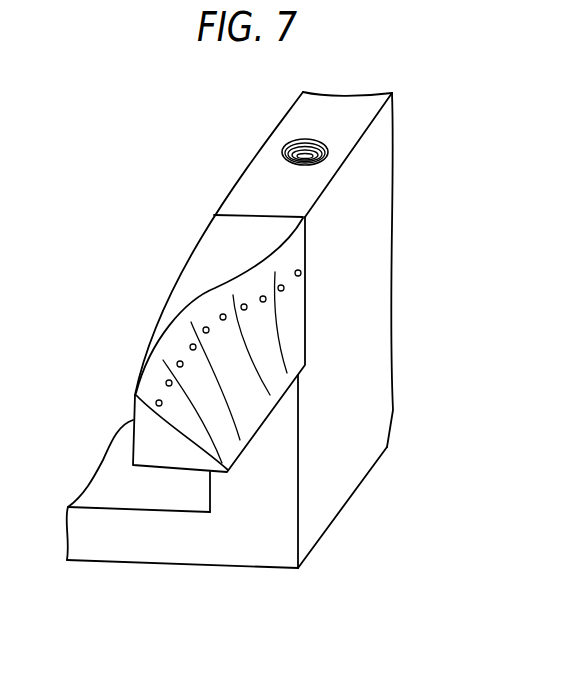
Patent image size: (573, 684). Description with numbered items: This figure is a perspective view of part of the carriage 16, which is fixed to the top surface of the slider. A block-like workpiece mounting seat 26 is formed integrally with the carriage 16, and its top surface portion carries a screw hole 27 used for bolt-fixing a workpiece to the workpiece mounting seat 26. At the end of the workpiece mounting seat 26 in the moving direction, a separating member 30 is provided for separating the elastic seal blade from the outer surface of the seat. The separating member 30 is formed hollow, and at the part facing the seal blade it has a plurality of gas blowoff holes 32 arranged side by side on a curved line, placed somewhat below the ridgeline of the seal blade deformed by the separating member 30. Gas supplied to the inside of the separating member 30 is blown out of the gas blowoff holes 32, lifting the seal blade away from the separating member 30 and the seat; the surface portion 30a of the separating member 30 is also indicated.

The carriage 16 is at (140, 542).
The workpiece mounting seat 26 is at (367, 245).
The screw hole 27 is at (287, 142).
The separating member 30 is at (207, 250).
The surface portion with grooves 30a is at (240, 405).
The gas blowoff hole 32 is at (166, 381).